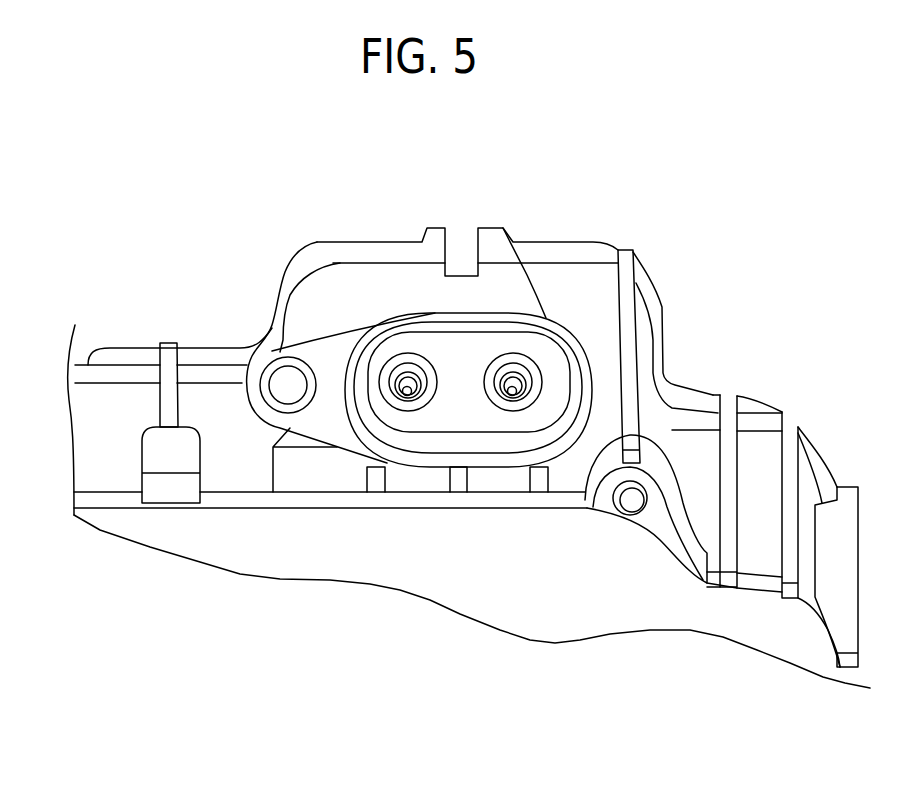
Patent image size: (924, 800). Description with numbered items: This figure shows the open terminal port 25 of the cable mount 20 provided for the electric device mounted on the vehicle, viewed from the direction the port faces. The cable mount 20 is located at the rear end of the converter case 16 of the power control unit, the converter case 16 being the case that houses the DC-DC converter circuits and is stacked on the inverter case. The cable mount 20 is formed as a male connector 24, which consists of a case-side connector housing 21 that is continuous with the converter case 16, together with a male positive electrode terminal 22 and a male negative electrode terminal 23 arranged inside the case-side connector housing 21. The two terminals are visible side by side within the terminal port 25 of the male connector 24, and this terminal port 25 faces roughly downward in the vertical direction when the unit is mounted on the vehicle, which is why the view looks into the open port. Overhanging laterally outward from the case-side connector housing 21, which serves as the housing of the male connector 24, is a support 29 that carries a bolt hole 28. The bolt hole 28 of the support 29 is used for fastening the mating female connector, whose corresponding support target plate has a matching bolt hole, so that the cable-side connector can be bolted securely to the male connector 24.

The converter case 16 is at (688, 460).
The cable mount 20 is at (415, 273).
The case-side connector housing 21 is at (378, 318).
The male positive electrode terminal 22 is at (513, 367).
The male negative electrode terminal 23 is at (407, 367).
The male connector 24 is at (596, 316).
The terminal port 25 is at (404, 323).
The bolt hole 28 is at (288, 380).
The support 29 is at (313, 337).